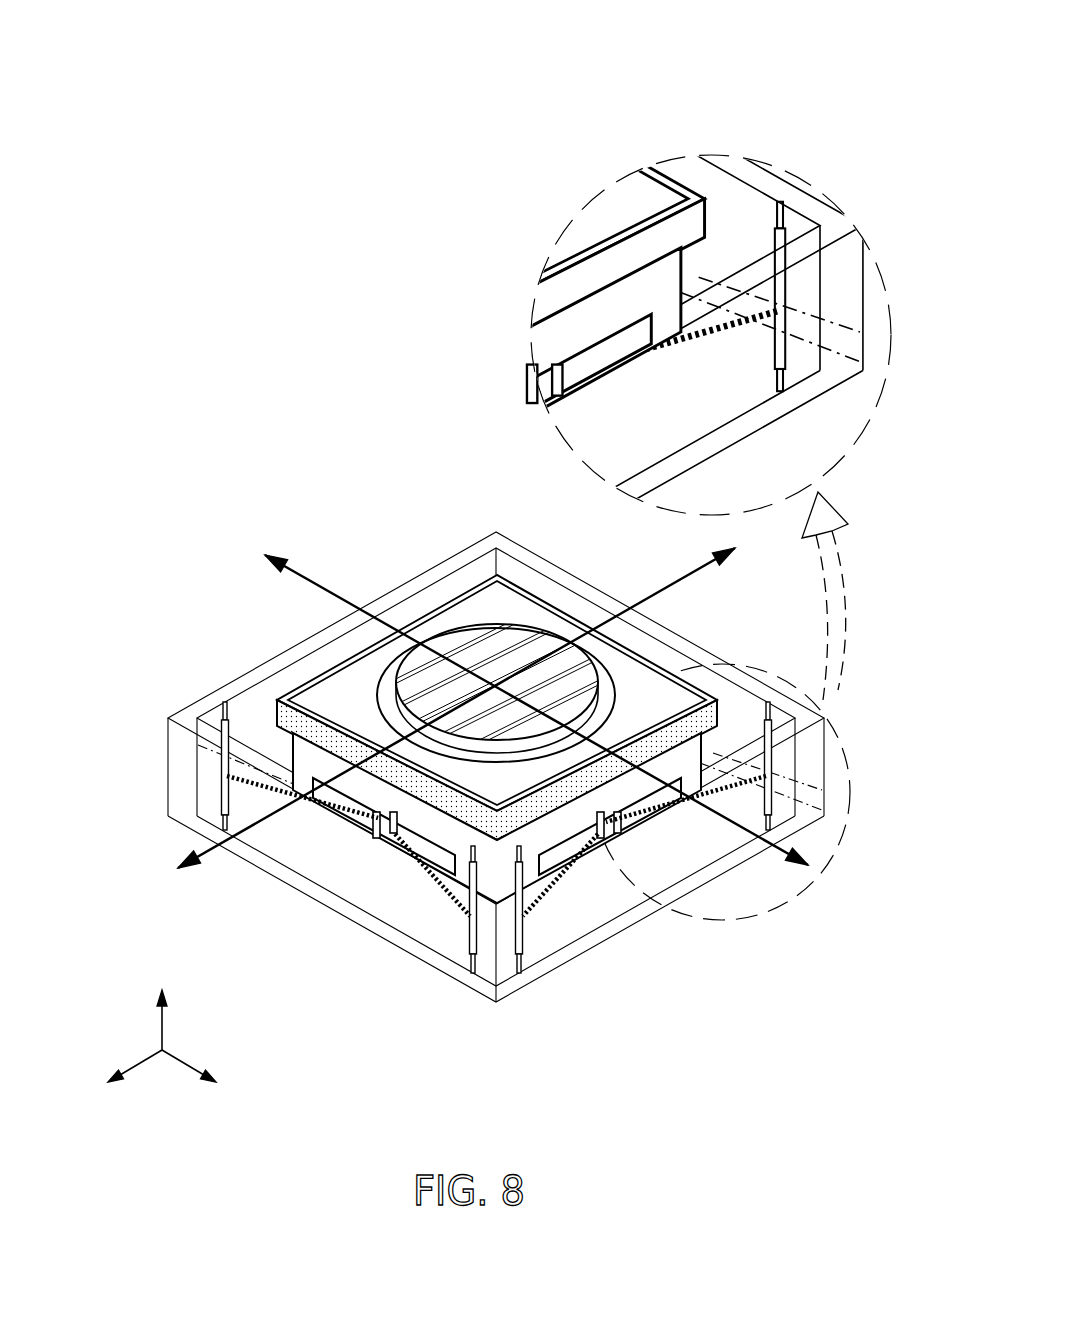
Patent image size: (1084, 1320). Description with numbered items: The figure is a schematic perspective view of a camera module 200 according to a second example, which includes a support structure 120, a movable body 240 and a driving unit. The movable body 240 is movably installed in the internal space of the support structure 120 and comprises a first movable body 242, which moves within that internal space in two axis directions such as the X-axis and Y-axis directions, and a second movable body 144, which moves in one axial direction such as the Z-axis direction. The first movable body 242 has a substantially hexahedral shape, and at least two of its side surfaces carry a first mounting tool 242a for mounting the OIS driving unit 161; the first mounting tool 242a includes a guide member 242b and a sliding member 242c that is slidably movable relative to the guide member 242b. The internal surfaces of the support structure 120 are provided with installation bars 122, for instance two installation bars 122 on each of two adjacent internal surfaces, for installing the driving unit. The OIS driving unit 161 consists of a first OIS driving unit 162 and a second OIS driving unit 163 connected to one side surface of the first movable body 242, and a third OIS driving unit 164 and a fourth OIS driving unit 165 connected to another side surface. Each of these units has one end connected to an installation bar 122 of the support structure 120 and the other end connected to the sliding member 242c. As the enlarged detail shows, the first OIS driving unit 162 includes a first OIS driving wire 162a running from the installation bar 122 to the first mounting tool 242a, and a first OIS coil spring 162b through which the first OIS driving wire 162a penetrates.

The camera module 200 is at (356, 238).
The support structure 120 is at (537, 557).
The installation bar 122 is at (765, 716).
The movable body 240 is at (428, 604).
The first movable body 242 is at (303, 753).
The first mounting tool 242a is at (642, 994).
The guide member 242b is at (573, 850).
The sliding member 242c is at (628, 865).
The second movable body 144 is at (393, 670).
The OIS driving unit 161 is at (148, 331).
The first OIS driving unit 162 is at (697, 816).
The first OIS driving wire 162a is at (762, 318).
The first OIS coil spring 162b is at (673, 332).
The second OIS driving unit 163 is at (562, 893).
The third OIS driving unit 164 is at (427, 888).
The fourth OIS driving unit 165 is at (327, 825).